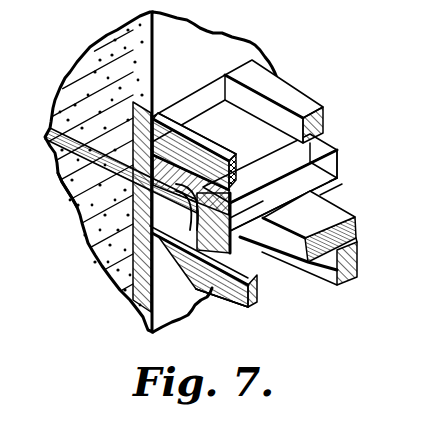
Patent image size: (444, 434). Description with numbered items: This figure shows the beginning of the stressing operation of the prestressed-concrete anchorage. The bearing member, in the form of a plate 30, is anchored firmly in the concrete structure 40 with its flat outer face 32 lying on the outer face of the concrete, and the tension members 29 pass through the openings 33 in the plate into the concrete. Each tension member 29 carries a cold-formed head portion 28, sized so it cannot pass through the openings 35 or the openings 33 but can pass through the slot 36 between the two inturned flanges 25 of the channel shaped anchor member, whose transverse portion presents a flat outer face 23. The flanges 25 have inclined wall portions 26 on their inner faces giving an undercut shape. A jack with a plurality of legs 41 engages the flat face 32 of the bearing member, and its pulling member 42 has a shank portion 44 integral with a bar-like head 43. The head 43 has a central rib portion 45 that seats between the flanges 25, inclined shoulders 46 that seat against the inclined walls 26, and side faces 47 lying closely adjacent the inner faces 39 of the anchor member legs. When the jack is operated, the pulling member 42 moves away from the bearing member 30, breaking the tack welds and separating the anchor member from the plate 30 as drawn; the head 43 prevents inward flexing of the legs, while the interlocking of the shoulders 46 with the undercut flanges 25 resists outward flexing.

The flat outer face 23 is at (157, 113).
The inturned flanges 25 is at (336, 150).
The inclined wall portions 26 is at (245, 215).
The head portion 28 is at (220, 155).
The tension member 29 is at (67, 191).
The bearing member plate 30 is at (189, 93).
The flat outer face 32 is at (133, 283).
The openings 33 is at (95, 222).
The openings 35 is at (181, 135).
The slot 36 is at (337, 181).
The inner faces 39 is at (188, 265).
The concrete structure 40 is at (227, 33).
The jack legs 41 is at (282, 93).
The pulling member 42 is at (362, 214).
The head 43 is at (195, 312).
The shank portion 44 is at (327, 211).
The central rib portion 45 is at (248, 240).
The inclined shoulders 46 is at (250, 187).
The side faces 47 is at (232, 162).